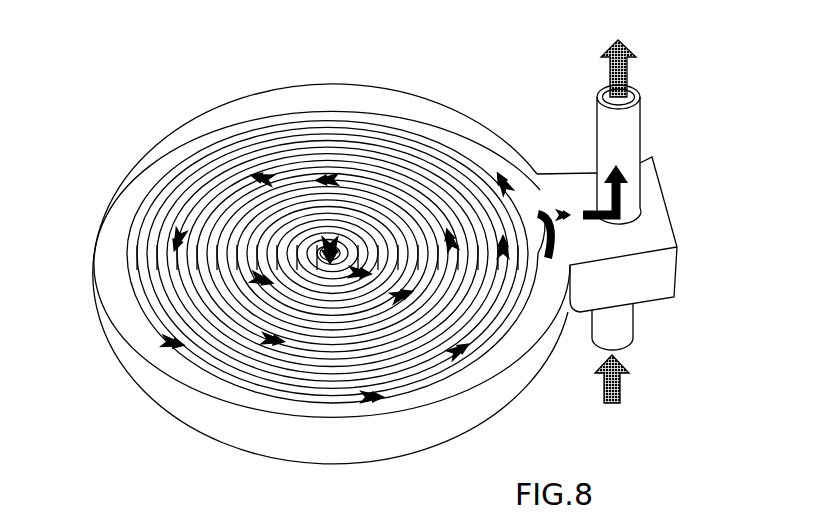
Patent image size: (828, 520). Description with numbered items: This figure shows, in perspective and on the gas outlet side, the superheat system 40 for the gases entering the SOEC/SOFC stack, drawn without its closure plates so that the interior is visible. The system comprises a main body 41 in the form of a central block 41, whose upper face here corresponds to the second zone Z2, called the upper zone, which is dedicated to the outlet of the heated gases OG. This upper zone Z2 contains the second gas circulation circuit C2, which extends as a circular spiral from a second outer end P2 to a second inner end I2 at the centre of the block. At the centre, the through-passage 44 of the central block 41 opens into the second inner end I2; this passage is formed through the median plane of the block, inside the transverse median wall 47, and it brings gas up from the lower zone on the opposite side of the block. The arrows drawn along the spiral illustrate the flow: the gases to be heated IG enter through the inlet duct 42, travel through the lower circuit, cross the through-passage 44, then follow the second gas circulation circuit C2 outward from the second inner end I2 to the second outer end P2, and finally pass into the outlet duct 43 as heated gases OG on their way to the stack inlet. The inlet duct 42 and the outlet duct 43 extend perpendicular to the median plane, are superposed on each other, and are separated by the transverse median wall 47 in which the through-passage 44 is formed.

The superheat system 40 is at (190, 70).
The main body 41 is at (128, 358).
The inlet duct 42 is at (624, 322).
The outlet duct 43 is at (640, 133).
The through-passage 44 is at (316, 249).
The transverse median wall 47 is at (476, 262).
The second zone Z2 is at (150, 192).
The second inner end I2 is at (329, 238).
The second gas circulation circuit C2 is at (373, 146).
The second outer end P2 is at (551, 206).
The heated gases OG is at (628, 72).
The gases to be heated IG is at (620, 391).